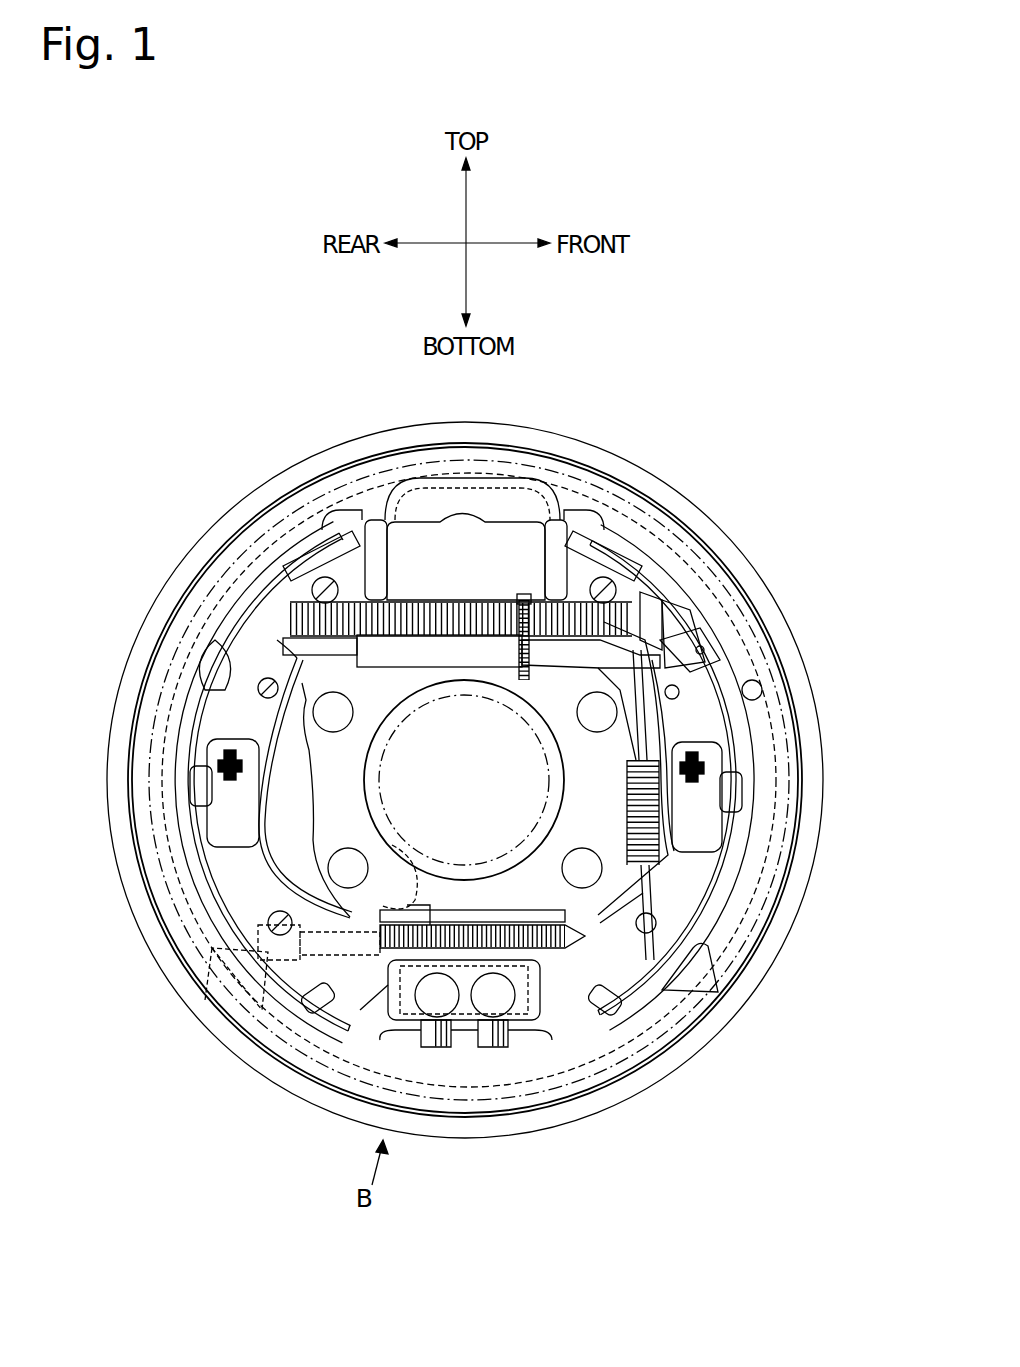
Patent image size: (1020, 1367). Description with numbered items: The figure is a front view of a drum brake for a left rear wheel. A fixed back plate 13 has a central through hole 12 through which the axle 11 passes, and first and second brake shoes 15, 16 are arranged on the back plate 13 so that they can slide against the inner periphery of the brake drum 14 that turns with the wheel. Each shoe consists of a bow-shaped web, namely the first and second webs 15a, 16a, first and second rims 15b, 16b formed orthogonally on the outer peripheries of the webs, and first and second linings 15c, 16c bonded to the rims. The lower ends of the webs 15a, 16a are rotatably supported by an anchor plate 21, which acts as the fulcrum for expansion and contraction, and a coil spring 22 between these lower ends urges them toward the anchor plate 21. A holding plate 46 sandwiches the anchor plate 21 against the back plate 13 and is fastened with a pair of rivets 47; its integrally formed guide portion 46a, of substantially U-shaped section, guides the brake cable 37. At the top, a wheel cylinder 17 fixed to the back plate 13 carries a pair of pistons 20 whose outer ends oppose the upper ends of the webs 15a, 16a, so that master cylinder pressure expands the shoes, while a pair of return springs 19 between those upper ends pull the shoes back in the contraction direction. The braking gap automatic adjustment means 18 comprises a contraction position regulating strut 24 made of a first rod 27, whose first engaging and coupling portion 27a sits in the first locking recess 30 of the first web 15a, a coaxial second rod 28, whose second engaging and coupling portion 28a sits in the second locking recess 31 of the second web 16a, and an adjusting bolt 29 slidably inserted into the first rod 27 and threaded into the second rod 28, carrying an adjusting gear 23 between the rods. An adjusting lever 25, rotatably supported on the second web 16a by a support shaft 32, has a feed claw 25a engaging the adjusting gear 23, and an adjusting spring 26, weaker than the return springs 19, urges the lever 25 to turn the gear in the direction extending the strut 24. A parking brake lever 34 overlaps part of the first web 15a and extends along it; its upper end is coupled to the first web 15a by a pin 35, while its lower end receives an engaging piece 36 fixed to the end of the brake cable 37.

The axle 11 is at (565, 784).
The through hole 12 is at (412, 860).
The back plate 13 is at (814, 806).
The brake drum 14 is at (652, 528).
The first brake shoe 15 is at (227, 607).
The first web 15a is at (230, 673).
The first rim 15b is at (222, 712).
The first lining 15c is at (188, 712).
The second brake shoe 16 is at (758, 768).
The second web 16a is at (730, 708).
The second rim 16b is at (700, 635).
The second lining 16c is at (690, 615).
The wheel cylinder 17 is at (515, 520).
The braking gap automatic adjustment means 18 is at (705, 662).
The return springs 19 is at (425, 602).
The pistons 20 is at (328, 527).
The anchor plate 21 is at (583, 1010).
The coil spring 22 is at (492, 1000).
The adjusting gear 23 is at (527, 665).
The contraction position regulating strut 24 is at (420, 672).
The adjusting lever 25 is at (598, 668).
The feed claw 25a is at (527, 600).
The adjusting spring 26 is at (630, 805).
The first rod 27 is at (405, 655).
The first engaging and coupling portion 27a is at (322, 770).
The second rod 28 is at (555, 662).
The second engaging and coupling portion 28a is at (640, 592).
The adjusting bolt 29 is at (508, 708).
The first locking recess 30 is at (259, 692).
The second locking recess 31 is at (700, 650).
The support shaft 32 is at (682, 692).
The parking brake lever 34 is at (285, 837).
The pin 35 is at (312, 585).
The engaging piece 36 is at (252, 1040).
The brake cable 37 is at (480, 925).
The holding plate 46 is at (375, 990).
The guide portion 46a is at (447, 912).
The rivets 47 is at (438, 1005).